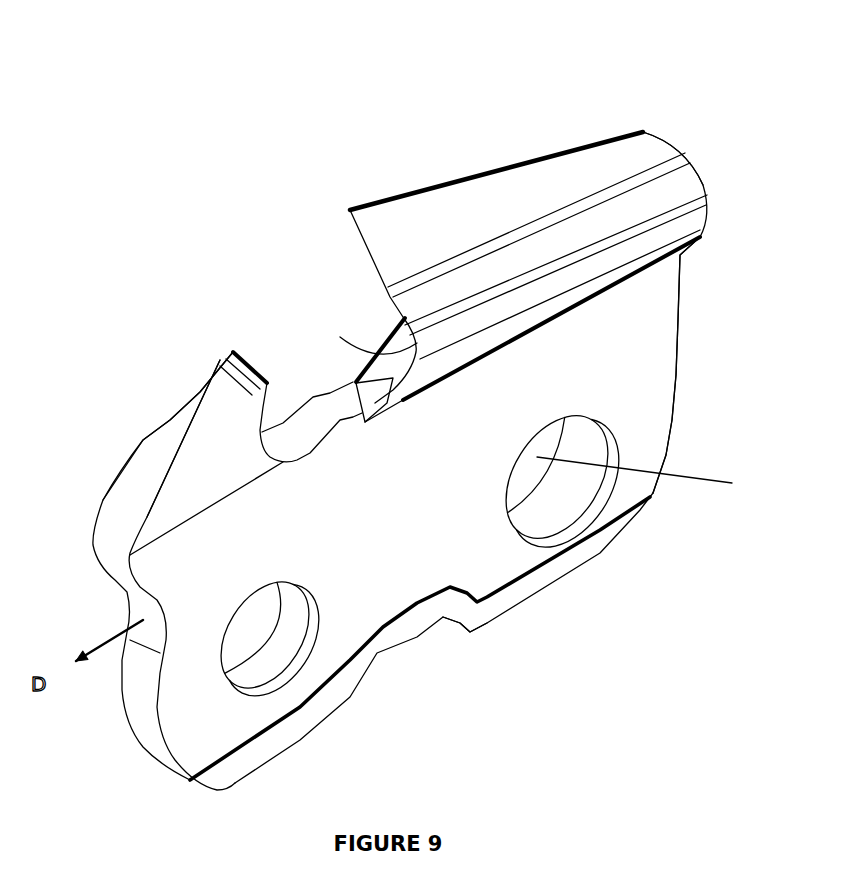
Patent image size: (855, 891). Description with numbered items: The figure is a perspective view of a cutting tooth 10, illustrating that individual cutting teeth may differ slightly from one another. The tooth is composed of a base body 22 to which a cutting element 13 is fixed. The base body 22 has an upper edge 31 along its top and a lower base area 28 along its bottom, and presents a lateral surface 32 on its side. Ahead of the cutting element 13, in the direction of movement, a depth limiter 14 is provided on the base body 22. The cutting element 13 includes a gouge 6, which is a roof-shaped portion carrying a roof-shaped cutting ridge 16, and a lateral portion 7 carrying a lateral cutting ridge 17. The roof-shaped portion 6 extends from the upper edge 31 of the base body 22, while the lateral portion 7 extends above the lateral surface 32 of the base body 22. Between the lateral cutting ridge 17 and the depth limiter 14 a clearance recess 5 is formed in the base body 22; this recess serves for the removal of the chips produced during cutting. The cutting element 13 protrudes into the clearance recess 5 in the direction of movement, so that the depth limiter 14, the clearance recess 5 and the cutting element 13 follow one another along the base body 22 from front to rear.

The cutting tooth 10 is at (665, 602).
The cutting element 13 is at (507, 198).
The depth limiter 14 is at (173, 435).
The clearance recess 5 is at (295, 360).
The gouge 6 is at (400, 235).
The roof-shaped cutting ridge 16 is at (367, 247).
The lateral cutting ridge 17 is at (377, 350).
The lateral portion 7 is at (598, 268).
The upper edge 31 is at (651, 158).
The lateral surface 32 is at (672, 338).
The base body 22 is at (402, 585).
The lower base area 28 is at (484, 574).